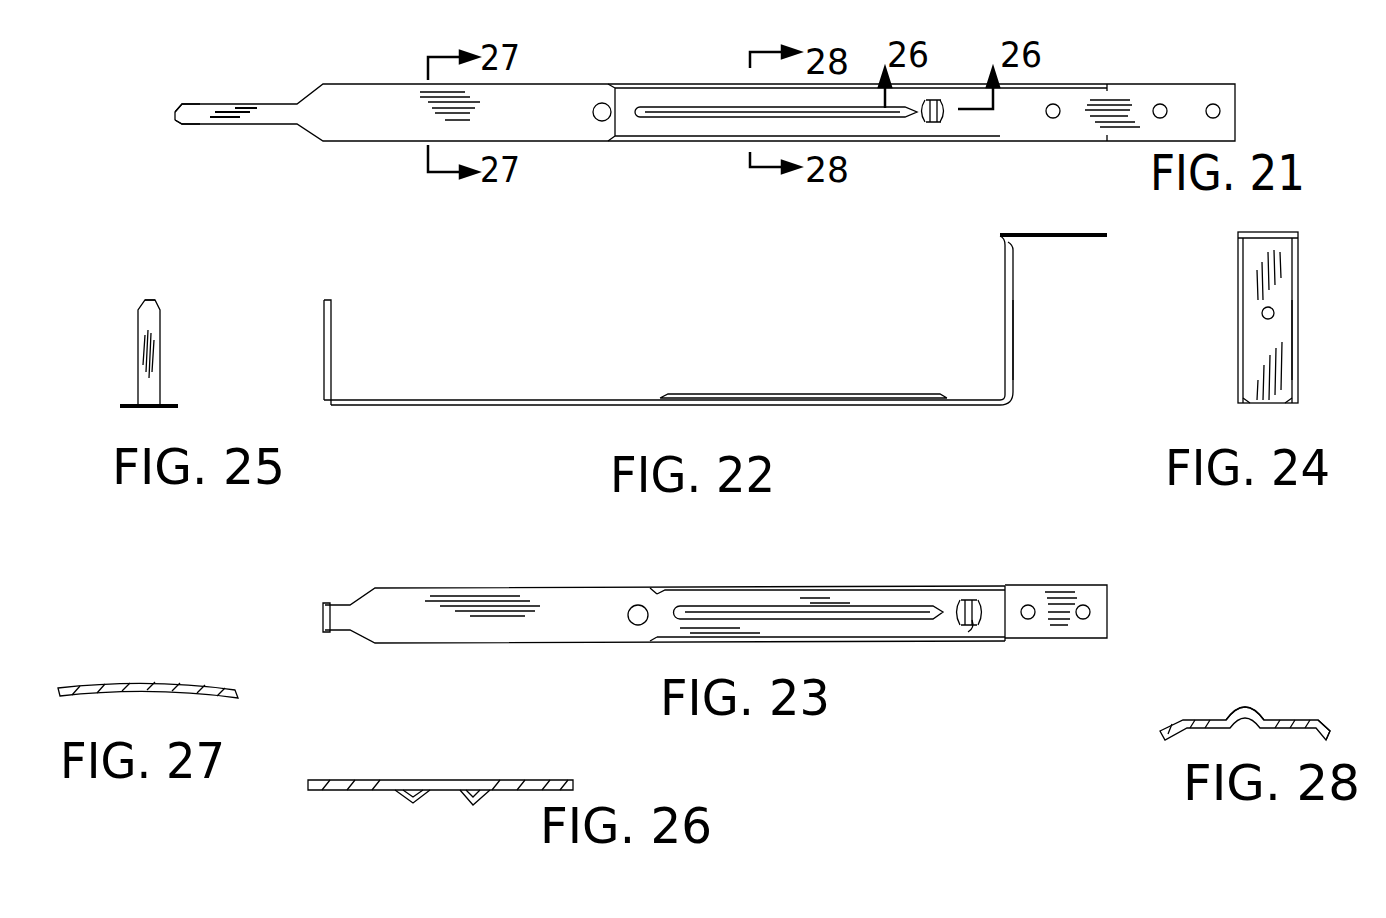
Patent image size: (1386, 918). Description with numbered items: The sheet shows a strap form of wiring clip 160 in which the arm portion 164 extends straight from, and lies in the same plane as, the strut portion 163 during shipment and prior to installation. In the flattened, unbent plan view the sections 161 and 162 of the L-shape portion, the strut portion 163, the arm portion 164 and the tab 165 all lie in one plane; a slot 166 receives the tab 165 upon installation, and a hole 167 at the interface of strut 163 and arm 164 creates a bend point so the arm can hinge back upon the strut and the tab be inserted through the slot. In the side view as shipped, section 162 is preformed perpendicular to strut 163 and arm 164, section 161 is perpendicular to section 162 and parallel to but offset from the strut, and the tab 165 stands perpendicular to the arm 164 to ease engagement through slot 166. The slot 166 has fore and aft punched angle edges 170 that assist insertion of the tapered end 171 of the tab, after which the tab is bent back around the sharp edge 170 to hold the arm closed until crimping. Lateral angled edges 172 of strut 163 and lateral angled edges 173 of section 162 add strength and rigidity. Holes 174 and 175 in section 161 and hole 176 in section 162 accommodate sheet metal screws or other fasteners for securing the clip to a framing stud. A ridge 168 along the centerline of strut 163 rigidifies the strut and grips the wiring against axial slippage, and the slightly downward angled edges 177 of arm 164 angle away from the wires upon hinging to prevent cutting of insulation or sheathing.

In FIG. 21, the clip 160 is at (660, 78).
In FIG. 21, the section of L-shape portion 161 is at (1200, 92).
In FIG. 22, the section of L-shape portion 161 is at (1075, 234).
In FIG. 24, the section of L-shape portion 161 is at (1277, 232).
In FIG. 23, the section of L-shape portion 161 is at (1065, 590).
In FIG. 21, the section of L-shape portion 162 is at (1077, 93).
In FIG. 22, the section of L-shape portion 162 is at (1010, 310).
In FIG. 24, the section of L-shape portion 162 is at (1275, 362).
In FIG. 21, the strut portion 163 is at (690, 128).
In FIG. 22, the strut portion 163 is at (850, 402).
In FIG. 23, the strut portion 163 is at (827, 614).
In FIG. 28, the strut portion 163 is at (1288, 704).
In FIG. 21, the arm portion 164 is at (418, 123).
In FIG. 22, the arm portion 164 is at (480, 405).
In FIG. 23, the arm portion 164 is at (548, 608).
In FIG. 21, the tab 165 is at (207, 120).
In FIG. 22, the tab 165 is at (324, 343).
In FIG. 25, the tab 165 is at (150, 325).
In FIG. 21, the slot 166 is at (931, 122).
In FIG. 23, the slot 166 is at (970, 600).
In FIG. 26, the slot 166 is at (442, 779).
In FIG. 21, the hole 167 is at (600, 121).
In FIG. 23, the hole 167 is at (640, 606).
In FIG. 21, the ridge 168 is at (855, 108).
In FIG. 23, the ridge 168 is at (845, 610).
In FIG. 28, the ridge 168 is at (1247, 704).
In FIG. 23, the punched angle edges 170 is at (972, 625).
In FIG. 26, the punched angle edges 170 is at (413, 806).
In FIG. 25, the tapered end 171 is at (160, 305).
In FIG. 22, the lateral angled edges 172 is at (988, 406).
In FIG. 28, the lateral angled edges 172 is at (1322, 719).
In FIG. 22, the lateral angled edges 173 is at (1012, 368).
In FIG. 24, the lateral angled edges 173 is at (1298, 335).
In FIG. 23, the hole 174 is at (1030, 619).
In FIG. 23, the hole 175 is at (1090, 612).
In FIG. 24, the hole 176 is at (1275, 310).
In FIG. 27, the downward angled edges 177 is at (62, 680).